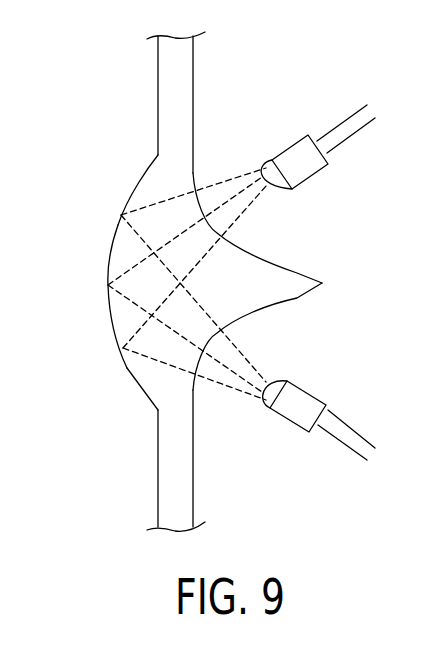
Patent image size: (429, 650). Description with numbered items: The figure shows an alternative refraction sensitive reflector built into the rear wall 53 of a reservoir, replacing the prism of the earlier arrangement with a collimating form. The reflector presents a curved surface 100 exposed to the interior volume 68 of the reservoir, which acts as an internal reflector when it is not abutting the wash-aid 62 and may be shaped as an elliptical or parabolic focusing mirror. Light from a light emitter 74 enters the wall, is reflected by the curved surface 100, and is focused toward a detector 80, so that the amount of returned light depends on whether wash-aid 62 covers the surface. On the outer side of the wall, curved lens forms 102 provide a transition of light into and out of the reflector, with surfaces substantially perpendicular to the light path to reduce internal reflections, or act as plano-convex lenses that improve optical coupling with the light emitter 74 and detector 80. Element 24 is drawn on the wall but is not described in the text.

The light guide wall 24 is at (194, 100).
The rear wall 53 is at (180, 497).
The wash-aid 62 is at (125, 176).
The interior volume 68 is at (70, 299).
The curved surface 100 is at (127, 368).
The curved lens forms 102 is at (291, 271).
The light emitter 74 is at (313, 174).
The detector 80 is at (310, 390).